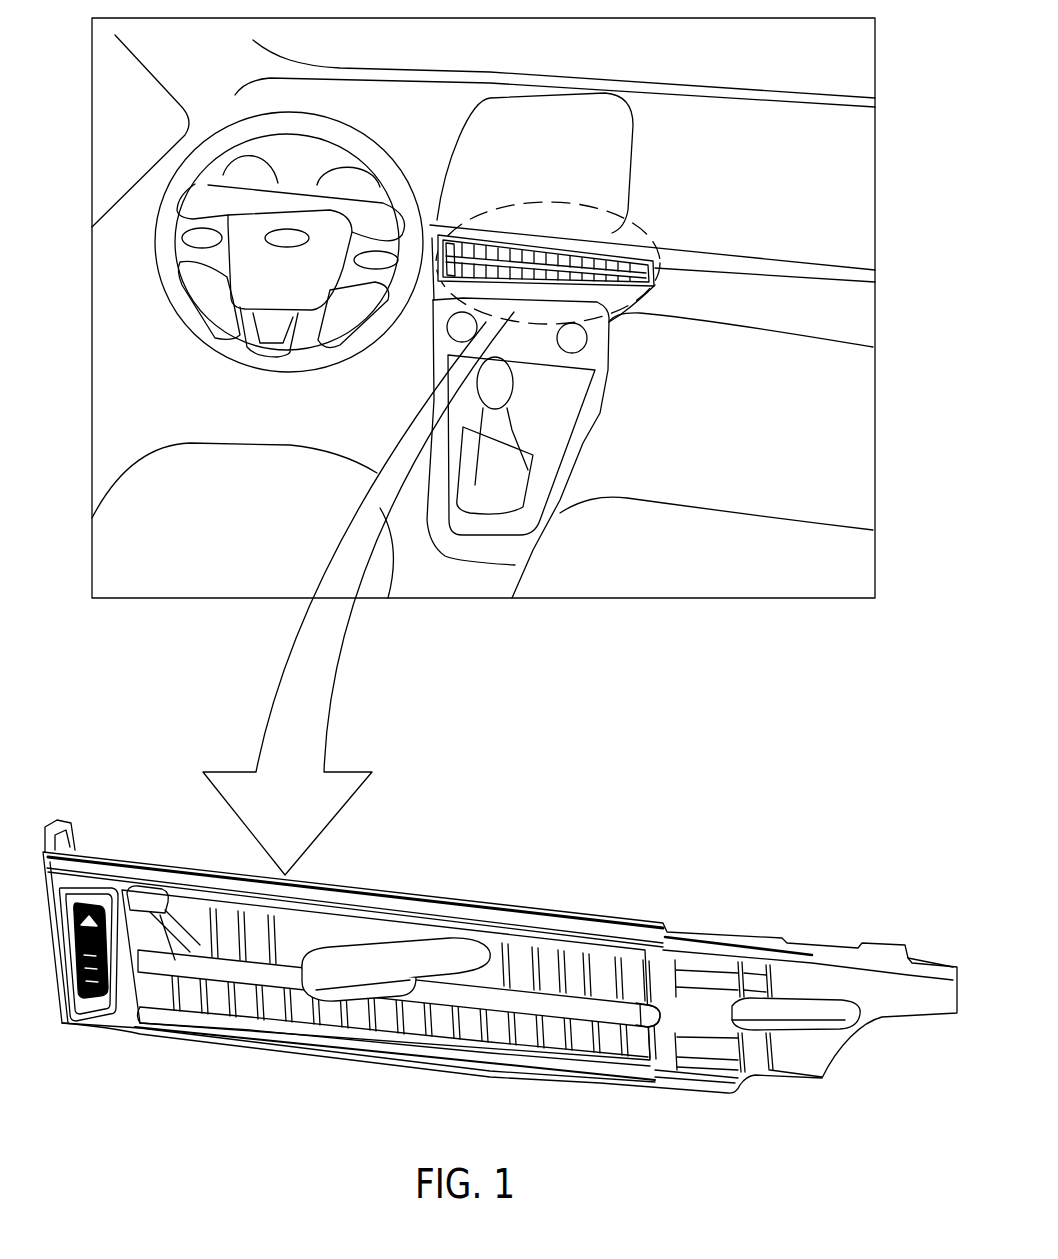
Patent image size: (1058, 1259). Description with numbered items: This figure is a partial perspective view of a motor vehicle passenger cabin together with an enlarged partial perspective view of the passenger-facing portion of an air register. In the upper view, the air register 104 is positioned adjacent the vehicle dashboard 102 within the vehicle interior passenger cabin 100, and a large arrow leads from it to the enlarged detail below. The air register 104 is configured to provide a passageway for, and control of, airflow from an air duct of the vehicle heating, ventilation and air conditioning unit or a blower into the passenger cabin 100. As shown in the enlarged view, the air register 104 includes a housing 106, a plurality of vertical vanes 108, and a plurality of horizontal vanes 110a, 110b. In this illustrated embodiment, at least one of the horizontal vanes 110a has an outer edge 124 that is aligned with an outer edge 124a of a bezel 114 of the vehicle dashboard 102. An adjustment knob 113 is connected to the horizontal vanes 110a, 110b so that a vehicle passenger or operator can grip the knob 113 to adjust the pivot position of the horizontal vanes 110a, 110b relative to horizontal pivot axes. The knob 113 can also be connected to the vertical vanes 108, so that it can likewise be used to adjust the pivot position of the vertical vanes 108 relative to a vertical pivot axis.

The vehicle interior passenger cabin 100 is at (655, 397).
The vehicle dashboard 102 is at (777, 293).
The air register 104 is at (558, 252).
The housing 106 is at (163, 923).
The vertical vanes 108 is at (513, 960).
The horizontal vane 110a is at (182, 963).
The horizontal vane 110b is at (260, 1020).
The adjustment knob 113 is at (385, 965).
The bezel 114 is at (690, 1017).
The outer edge 124 is at (497, 997).
The outer edge 124a is at (668, 1020).